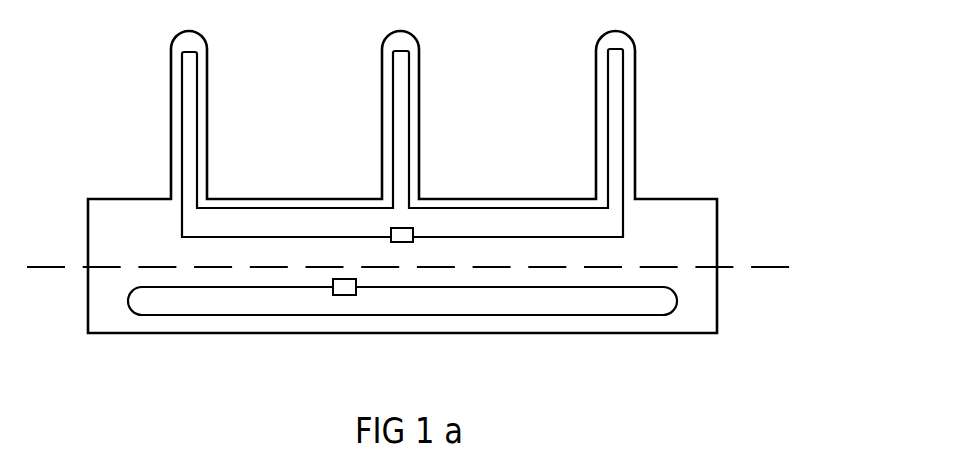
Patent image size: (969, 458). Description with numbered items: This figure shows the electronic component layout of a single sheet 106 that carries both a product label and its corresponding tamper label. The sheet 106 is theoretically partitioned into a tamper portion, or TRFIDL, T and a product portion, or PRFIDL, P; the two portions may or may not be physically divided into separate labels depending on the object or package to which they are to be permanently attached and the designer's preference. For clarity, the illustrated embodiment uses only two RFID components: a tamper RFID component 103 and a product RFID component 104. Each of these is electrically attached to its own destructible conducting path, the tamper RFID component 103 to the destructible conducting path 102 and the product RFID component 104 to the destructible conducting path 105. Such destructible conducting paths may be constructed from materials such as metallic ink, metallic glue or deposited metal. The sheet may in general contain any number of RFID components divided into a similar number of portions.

The tamper portion T is at (108, 210).
The product portion P is at (698, 311).
The destructible conducting path 102 is at (402, 143).
The tamper RFID component 103 is at (360, 298).
The product RFID component 104 is at (304, 215).
The destructible conducting path 105 is at (402, 328).
The sheet 106 is at (448, 182).